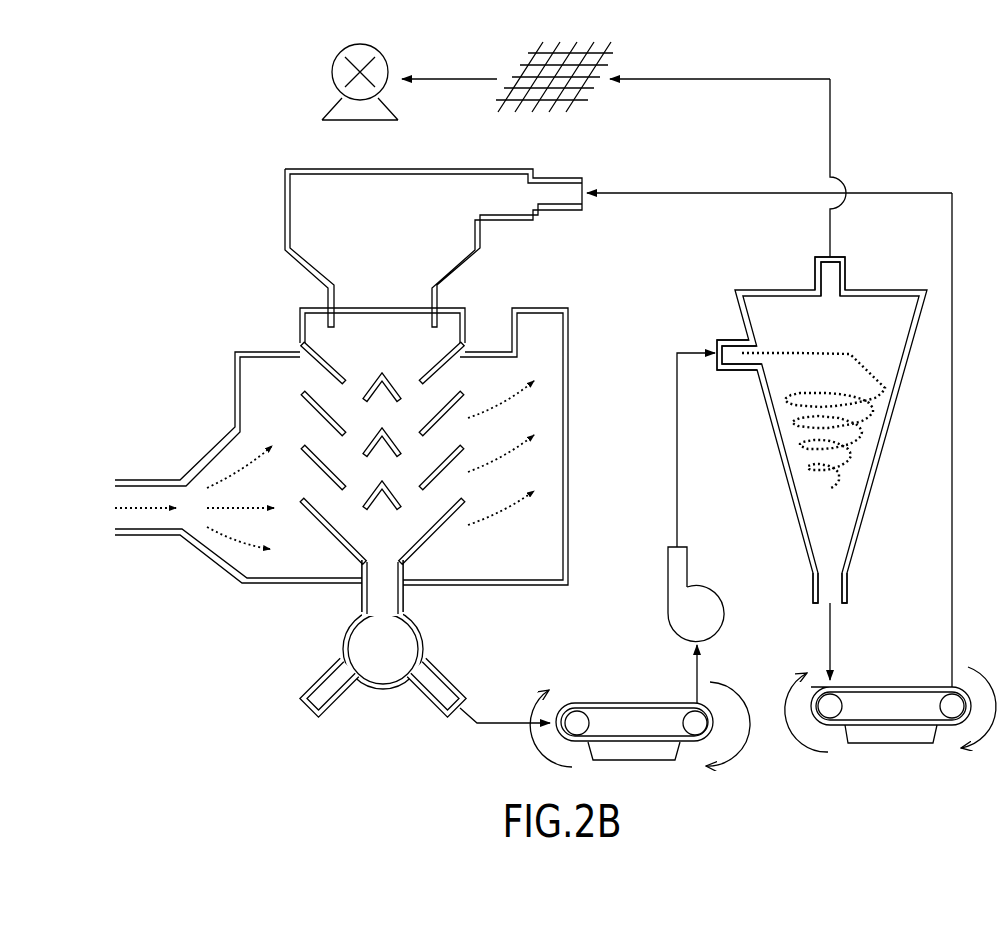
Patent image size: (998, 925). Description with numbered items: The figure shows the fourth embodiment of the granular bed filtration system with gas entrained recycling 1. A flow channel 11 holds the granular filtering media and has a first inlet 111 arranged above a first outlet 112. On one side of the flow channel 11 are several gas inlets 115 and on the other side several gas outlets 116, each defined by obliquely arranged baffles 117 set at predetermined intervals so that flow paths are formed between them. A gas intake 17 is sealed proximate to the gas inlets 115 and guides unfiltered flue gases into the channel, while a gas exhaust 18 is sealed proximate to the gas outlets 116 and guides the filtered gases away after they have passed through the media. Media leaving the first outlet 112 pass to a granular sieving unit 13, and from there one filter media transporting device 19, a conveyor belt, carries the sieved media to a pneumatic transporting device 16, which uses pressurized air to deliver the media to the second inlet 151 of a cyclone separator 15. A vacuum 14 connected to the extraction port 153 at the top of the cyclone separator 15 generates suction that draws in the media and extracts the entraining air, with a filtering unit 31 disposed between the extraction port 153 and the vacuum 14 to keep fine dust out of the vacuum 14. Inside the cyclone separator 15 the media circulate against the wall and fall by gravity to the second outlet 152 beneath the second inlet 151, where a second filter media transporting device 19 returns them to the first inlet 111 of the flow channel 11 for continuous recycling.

The granular bed filtration system with gas entrained recycling 1 is at (961, 56).
The flow channel 11 is at (238, 281).
The first inlet 111 is at (385, 316).
The first outlet 112 is at (385, 593).
The gas inlet 115 is at (327, 436).
The gas outlet 116 is at (440, 443).
The baffle 117 is at (327, 373).
The granular sieving unit 13 is at (428, 623).
The vacuum 14 is at (328, 93).
The cyclone separator 15 is at (771, 443).
The second inlet 151 is at (732, 357).
The second outlet 152 is at (833, 590).
The extraction port 153 is at (832, 275).
The pneumatic transporting device 16 is at (705, 572).
The gas intake 17 is at (232, 388).
The gas exhaust 18 is at (572, 326).
The filter media transporting device 19 is at (636, 698).
The filtering unit 31 is at (592, 95).